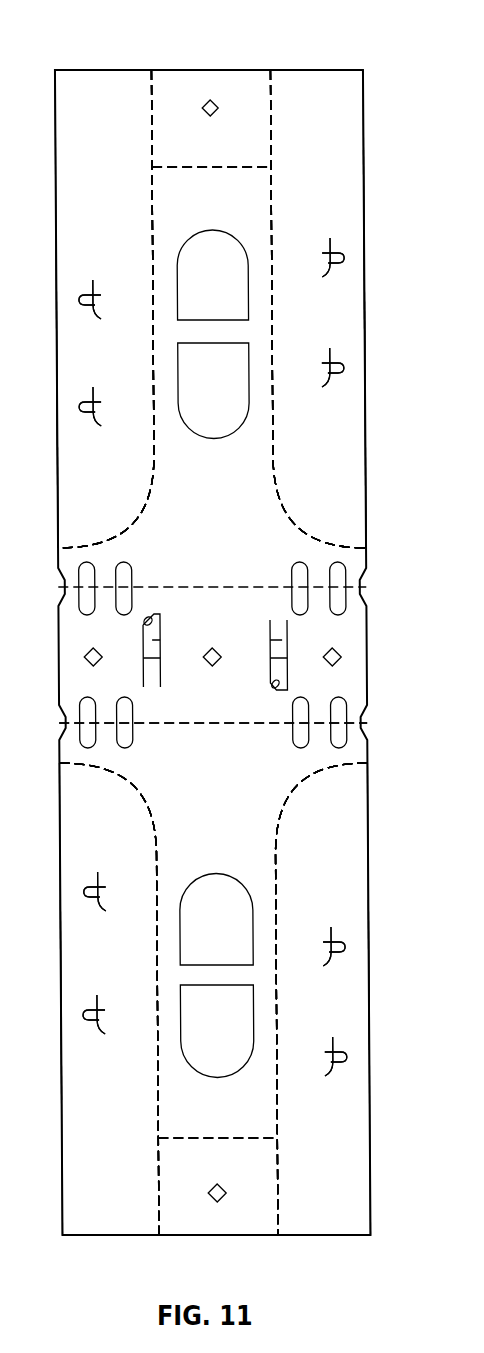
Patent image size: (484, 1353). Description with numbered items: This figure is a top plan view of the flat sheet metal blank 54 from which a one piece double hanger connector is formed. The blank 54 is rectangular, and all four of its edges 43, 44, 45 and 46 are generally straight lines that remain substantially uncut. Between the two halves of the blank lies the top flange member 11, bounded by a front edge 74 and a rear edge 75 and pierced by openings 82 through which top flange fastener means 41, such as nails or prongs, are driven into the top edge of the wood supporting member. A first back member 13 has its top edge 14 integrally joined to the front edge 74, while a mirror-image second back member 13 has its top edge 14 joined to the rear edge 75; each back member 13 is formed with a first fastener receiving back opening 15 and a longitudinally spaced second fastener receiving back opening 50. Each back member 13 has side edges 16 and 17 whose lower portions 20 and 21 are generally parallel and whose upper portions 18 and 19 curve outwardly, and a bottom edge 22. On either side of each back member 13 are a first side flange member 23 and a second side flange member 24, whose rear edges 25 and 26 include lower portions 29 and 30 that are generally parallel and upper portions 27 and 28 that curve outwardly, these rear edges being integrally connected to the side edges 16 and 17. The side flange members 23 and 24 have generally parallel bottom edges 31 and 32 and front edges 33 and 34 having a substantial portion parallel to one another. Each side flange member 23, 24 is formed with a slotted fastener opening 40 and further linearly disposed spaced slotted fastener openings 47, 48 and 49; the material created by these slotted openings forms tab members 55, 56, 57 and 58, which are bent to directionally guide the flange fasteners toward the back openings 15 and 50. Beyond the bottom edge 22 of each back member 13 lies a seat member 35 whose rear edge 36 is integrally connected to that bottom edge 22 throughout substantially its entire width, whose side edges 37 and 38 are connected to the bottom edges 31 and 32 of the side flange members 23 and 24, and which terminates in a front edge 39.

The blank edge 44 is at (78, 68).
The rectangular blank 54 is at (364, 62).
The front edge of seat member 39 is at (213, 69).
The front edge of second side flange member 34 is at (54, 218).
The front edge of first side flange member 33 is at (363, 157).
The second side flange member 24 is at (53, 322).
The blank edge 43 is at (53, 452).
The first side flange member 23 is at (364, 252).
The blank edge 45 is at (364, 382).
The back member 13 is at (228, 476).
The seat member 35 is at (201, 153).
The bottom edge of first side flange member 31 is at (270, 92).
The bottom edge of second side flange member 32 is at (174, 122).
The side edge of seat member 37 is at (270, 130).
The bottom edge of back member 22 is at (209, 165).
The side edge of seat member 38 is at (151, 157).
The lower portion of back member side edge 21 is at (151, 199).
The rear edge of seat member 36 is at (175, 170).
The lower portion of side flange rear edge 29 is at (269, 192).
The lower portion of back member side edge 20 is at (270, 204).
The lower portion of side flange rear edge 30 is at (153, 247).
The second fastener receiving back opening 50 is at (176, 275).
The rear edge of second side flange member 26 is at (153, 324).
The rear edge of first side flange member 25 is at (267, 356).
The side edge of back member 16 is at (272, 326).
The side edge of back member 17 is at (149, 335).
The first fastener receiving back opening 15 is at (176, 393).
The first slotted fastener opening 40 is at (328, 238).
The tab member 55 is at (90, 995).
The slotted fastener opening 47 is at (328, 348).
The tab member 56 is at (92, 872).
The slotted fastener opening 48 is at (91, 280).
The tab member 57 is at (326, 1037).
The slotted fastener opening 49 is at (90, 387).
The tab member 58 is at (216, 697).
The upper portion of back member side edge 19 is at (105, 533).
The upper portion of side flange rear edge 28 is at (116, 533).
The upper portion of back member side edge 18 is at (292, 522).
The upper portion of side flange rear edge 27 is at (280, 498).
The front edge of top flange member 74 is at (175, 587).
The rear edge of top flange member 75 is at (188, 723).
The top flange member 11 is at (228, 633).
The openings in top flange member 82 is at (149, 619).
The top flange fastener means 41 is at (156, 640).
The top edge of back member 14 is at (171, 717).
The blank edge 46 is at (318, 1243).